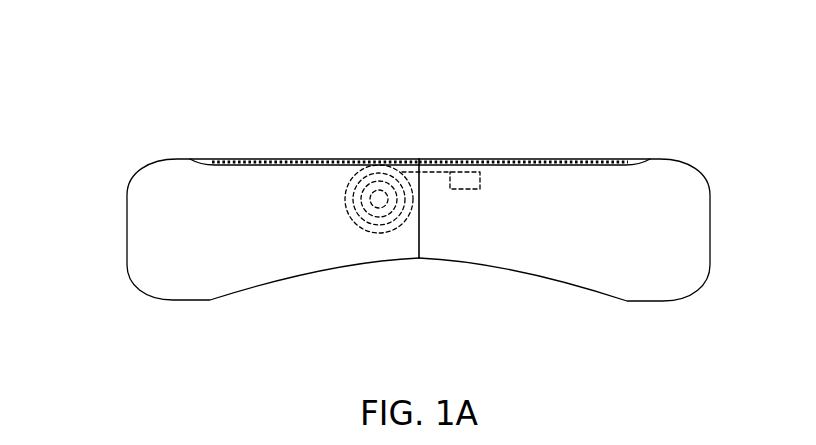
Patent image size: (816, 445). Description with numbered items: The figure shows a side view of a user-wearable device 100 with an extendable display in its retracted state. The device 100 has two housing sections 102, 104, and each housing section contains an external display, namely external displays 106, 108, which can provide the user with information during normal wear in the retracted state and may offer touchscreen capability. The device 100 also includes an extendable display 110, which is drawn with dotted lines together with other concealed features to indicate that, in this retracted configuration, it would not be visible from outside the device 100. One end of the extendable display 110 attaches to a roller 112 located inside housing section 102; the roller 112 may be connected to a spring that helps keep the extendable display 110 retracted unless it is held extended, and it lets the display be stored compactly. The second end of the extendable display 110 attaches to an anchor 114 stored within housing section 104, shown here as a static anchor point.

The user-wearable device 100 is at (150, 82).
The housing section 102 is at (150, 183).
The housing section 104 is at (683, 187).
The external display 106 is at (290, 158).
The external display 108 is at (537, 162).
The extendable display 110 is at (422, 172).
The roller 112 is at (355, 193).
The anchor 114 is at (467, 178).